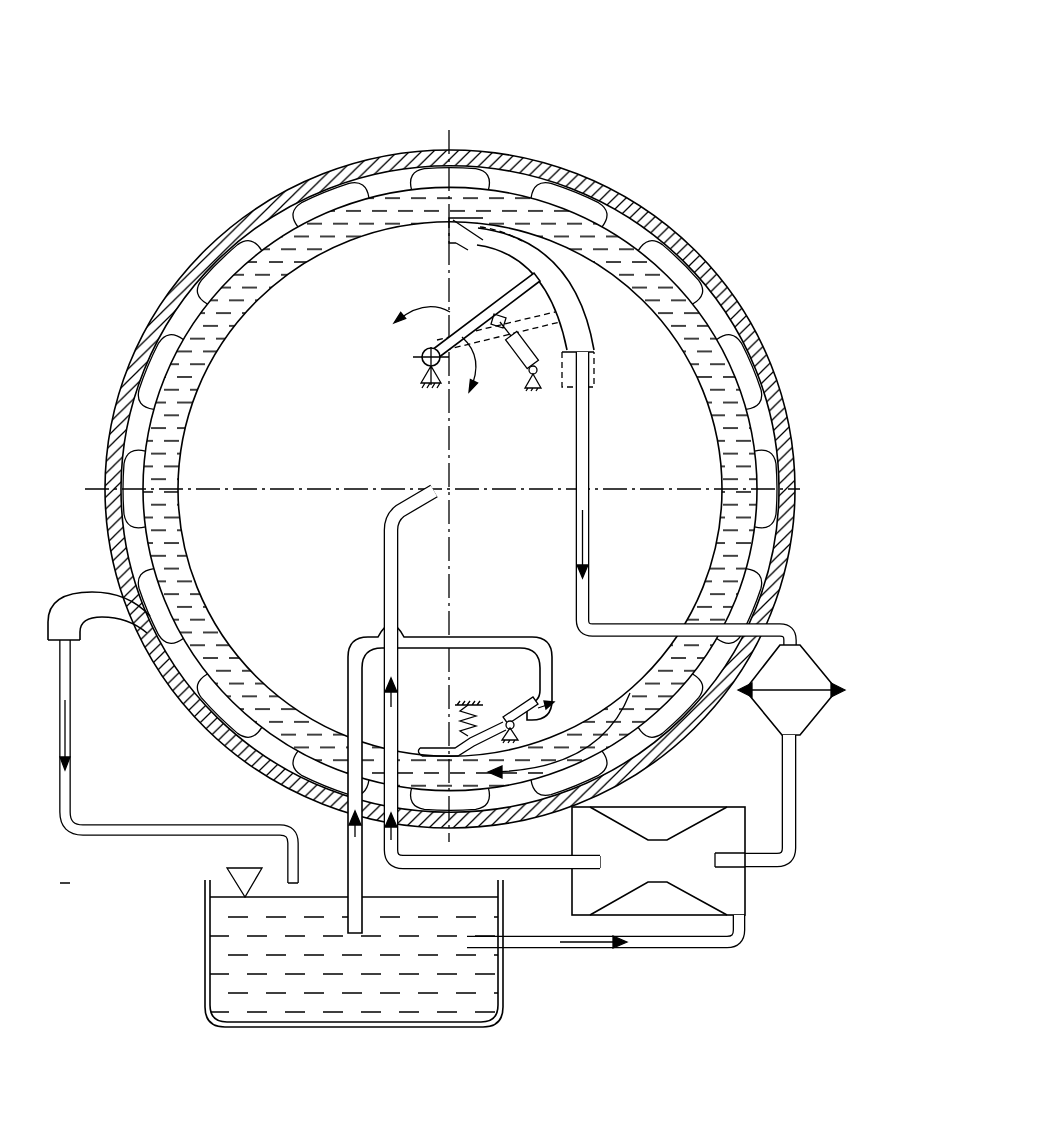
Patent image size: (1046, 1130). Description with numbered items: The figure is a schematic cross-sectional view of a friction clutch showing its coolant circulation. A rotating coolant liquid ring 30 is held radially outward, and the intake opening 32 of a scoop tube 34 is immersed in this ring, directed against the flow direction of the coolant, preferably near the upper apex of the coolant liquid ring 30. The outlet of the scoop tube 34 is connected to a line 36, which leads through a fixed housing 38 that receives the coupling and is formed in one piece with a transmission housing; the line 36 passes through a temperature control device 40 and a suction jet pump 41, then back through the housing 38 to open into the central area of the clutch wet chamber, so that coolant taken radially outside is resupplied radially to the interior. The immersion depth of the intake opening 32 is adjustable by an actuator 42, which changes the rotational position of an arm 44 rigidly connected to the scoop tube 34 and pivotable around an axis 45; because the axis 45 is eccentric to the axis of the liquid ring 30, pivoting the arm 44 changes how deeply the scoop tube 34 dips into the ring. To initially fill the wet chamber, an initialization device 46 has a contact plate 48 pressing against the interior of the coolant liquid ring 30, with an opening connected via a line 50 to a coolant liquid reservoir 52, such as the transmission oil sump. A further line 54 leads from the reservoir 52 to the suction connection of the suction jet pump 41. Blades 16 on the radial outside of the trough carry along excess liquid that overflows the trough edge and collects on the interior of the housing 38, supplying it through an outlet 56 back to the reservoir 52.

The blades 16 is at (790, 360).
The coolant liquid ring 30 is at (752, 292).
The intake opening 32 is at (475, 217).
The scoop tube 34 is at (583, 333).
The line 36 is at (596, 455).
The housing 38 is at (622, 204).
The temperature control device 40 is at (798, 718).
The suction jet pump 41 is at (728, 885).
The actuator 42 is at (520, 364).
The arm 44 is at (492, 300).
The axis 45 is at (422, 360).
The initialization device 46 is at (512, 713).
The contact plate 48 is at (430, 740).
The line 50 is at (473, 643).
The coolant liquid reservoir 52 is at (390, 985).
The further line 54 is at (666, 948).
The outlet 56 is at (70, 618).